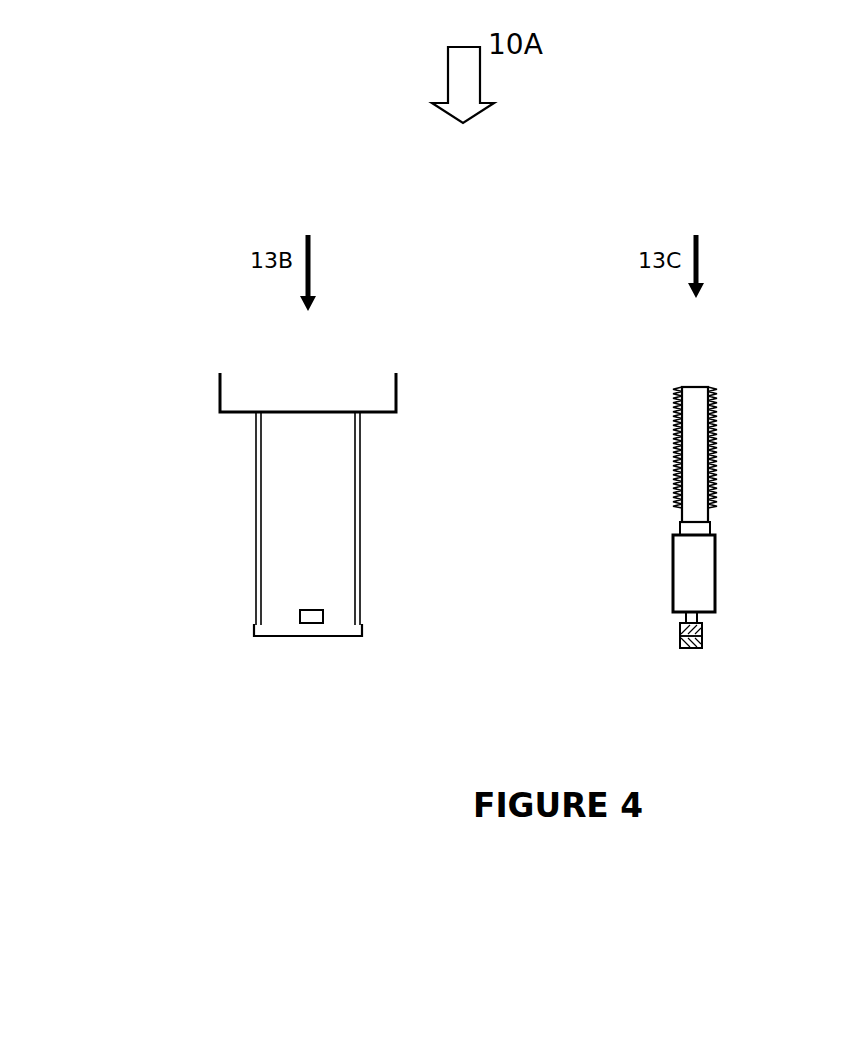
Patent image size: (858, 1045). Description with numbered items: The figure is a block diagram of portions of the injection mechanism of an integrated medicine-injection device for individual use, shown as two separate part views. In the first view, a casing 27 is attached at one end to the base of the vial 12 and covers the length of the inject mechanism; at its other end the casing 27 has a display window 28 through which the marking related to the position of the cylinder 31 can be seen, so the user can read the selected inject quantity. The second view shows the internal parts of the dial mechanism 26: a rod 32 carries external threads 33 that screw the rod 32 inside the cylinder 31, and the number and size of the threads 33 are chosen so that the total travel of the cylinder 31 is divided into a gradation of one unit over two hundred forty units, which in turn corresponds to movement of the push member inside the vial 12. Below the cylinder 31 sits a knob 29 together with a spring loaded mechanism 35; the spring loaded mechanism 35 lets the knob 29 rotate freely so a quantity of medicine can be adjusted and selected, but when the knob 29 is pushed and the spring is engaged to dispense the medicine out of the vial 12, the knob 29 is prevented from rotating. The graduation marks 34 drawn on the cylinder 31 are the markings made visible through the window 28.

The vial 12 is at (220, 383).
The casing 27 is at (256, 497).
The display window 28 is at (313, 608).
The dial mechanism 26 is at (702, 505).
The knob 29 is at (680, 646).
The cylinder 31 is at (718, 588).
The rod 32 is at (697, 386).
The external threads 33 is at (718, 432).
The graduated scale 34 is at (718, 556).
The spring loaded mechanism 35 is at (704, 632).